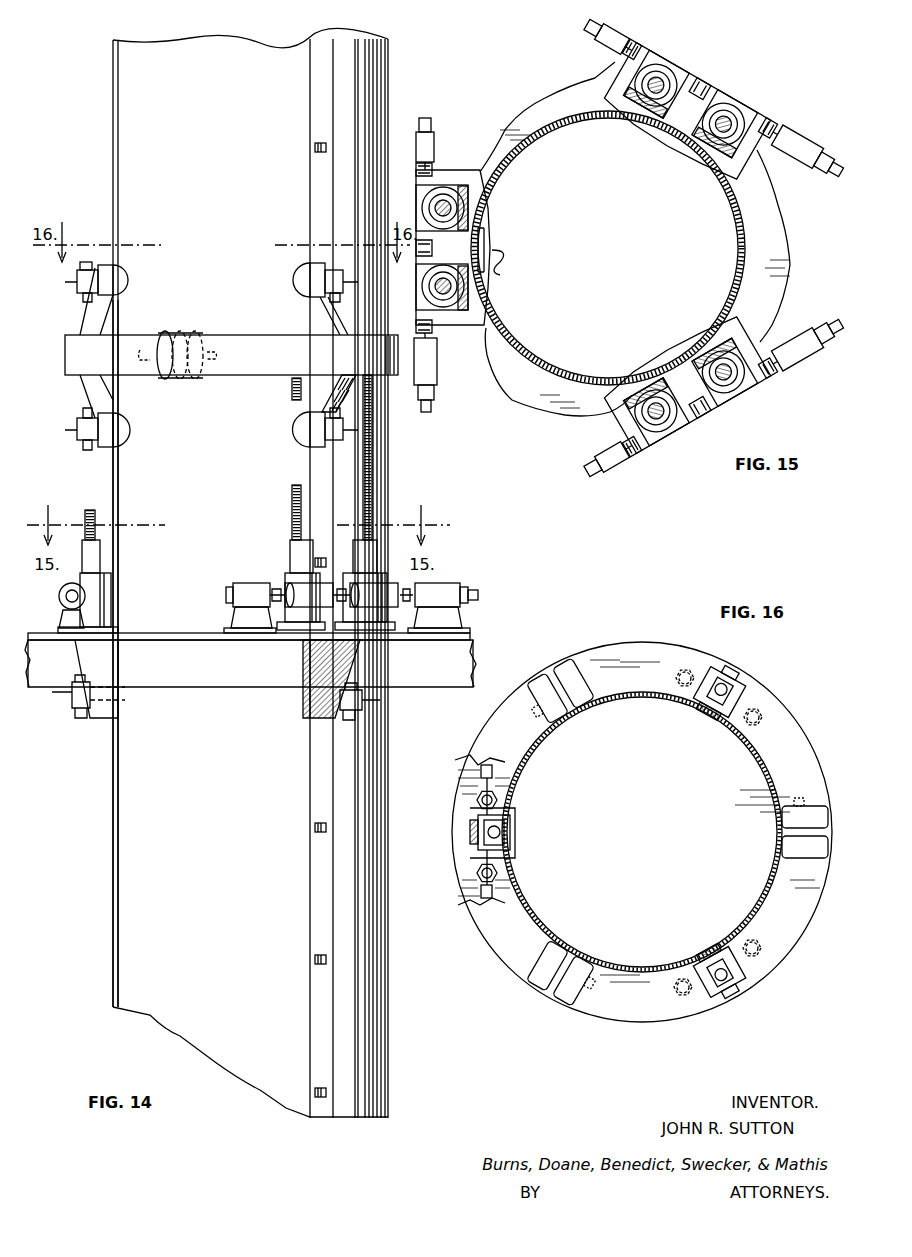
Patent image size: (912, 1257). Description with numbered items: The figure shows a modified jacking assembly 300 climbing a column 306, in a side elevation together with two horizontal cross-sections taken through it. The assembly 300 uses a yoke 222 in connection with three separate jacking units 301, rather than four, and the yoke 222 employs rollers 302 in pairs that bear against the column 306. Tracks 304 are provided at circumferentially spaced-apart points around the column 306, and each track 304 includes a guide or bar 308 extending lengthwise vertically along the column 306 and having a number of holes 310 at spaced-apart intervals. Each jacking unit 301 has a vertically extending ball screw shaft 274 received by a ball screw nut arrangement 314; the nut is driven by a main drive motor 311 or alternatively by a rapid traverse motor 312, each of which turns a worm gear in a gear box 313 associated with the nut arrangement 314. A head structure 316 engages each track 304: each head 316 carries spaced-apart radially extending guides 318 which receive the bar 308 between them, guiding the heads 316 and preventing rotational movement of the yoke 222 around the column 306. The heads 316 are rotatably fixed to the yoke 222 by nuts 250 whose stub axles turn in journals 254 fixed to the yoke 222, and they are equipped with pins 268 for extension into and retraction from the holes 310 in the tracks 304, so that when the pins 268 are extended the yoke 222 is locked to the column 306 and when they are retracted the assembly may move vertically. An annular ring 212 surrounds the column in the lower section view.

In FIG. 16, the annular support ring 212 is at (620, 1002).
In FIG. 14, the yoke 222 is at (275, 342).
In FIG. 16, the nuts 250 is at (476, 800).
In FIG. 16, the journals 254 is at (480, 770).
In FIG. 14, the pins 268 is at (118, 282).
In FIG. 14, the ball screw shafts 274 is at (90, 510).
In FIG. 15, the ball screw shafts 274 is at (448, 207).
In FIG. 14, the jacking assembly 300 is at (406, 457).
In FIG. 15, the jacking units 301 is at (452, 158).
In FIG. 14, the rollers 302 is at (165, 333).
In FIG. 16, the rollers 302 is at (565, 680).
In FIG. 14, the tracks 304 is at (300, 916).
In FIG. 16, the tracks 304 is at (640, 706).
In FIG. 14, the column 306 is at (225, 52).
In FIG. 15, the column 306 is at (515, 335).
In FIG. 16, the column 306 is at (552, 920).
In FIG. 14, the guide or bar 308 is at (113, 818).
In FIG. 15, the guide or bar 308 is at (492, 262).
In FIG. 16, the guide or bar 308 is at (507, 822).
In FIG. 14, the holes 310 is at (315, 828).
In FIG. 14, the main drive motor 311 is at (466, 590).
In FIG. 15, the main drive motor 311 is at (436, 368).
In FIG. 14, the rapid traverse motor 312 is at (311, 608).
In FIG. 15, the rapid traverse motor 312 is at (437, 160).
In FIG. 15, the gear box 313 is at (735, 400).
In FIG. 14, the ball screw nut arrangement 314 is at (112, 601).
In FIG. 15, the ball screw nut arrangement 314 is at (455, 215).
In FIG. 14, the head 316 is at (118, 318).
In FIG. 16, the head 316 is at (742, 700).
In FIG. 16, the guides 318 is at (703, 706).